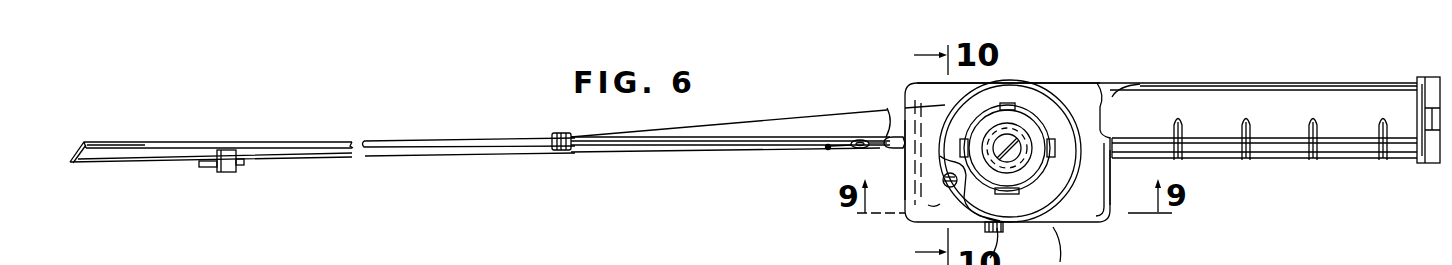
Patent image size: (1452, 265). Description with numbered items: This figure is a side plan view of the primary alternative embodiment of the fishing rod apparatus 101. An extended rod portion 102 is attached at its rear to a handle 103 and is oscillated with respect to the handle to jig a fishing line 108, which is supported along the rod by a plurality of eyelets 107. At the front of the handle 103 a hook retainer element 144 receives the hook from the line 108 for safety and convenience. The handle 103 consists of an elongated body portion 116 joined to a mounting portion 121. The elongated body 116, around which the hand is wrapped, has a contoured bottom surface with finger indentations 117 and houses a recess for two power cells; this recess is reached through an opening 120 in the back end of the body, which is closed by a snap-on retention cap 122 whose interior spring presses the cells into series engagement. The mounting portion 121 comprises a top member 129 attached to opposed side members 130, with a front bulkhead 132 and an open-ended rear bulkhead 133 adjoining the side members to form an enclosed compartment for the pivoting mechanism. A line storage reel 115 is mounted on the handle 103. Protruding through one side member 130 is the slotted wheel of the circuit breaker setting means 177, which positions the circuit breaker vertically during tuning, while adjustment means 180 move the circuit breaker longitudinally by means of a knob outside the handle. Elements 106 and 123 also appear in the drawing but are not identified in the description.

The fishing rod apparatus 101 is at (487, 144).
The extended rod portion 102 is at (373, 137).
The handle 103 is at (1311, 78).
The hook 106 is at (874, 113).
The eyelets 107 is at (560, 134).
The fishing line 108 is at (768, 124).
The line storage reel 115 is at (1010, 82).
The elongated body portion 116 is at (1348, 150).
The finger indentations 117 is at (1313, 162).
The opening 120 is at (1072, 246).
The mounting portion 121 is at (1077, 219).
The retention cap 122 is at (1427, 79).
The slot 123 is at (1424, 93).
The top member 129 is at (1071, 87).
The side members 130 is at (930, 207).
The front bulkhead 132 is at (905, 163).
The rear bulkhead 133 is at (1112, 192).
The hook retainer element 144 is at (895, 150).
The circuit breaker setting means 177 is at (945, 185).
The adjustment means 180 is at (1008, 238).